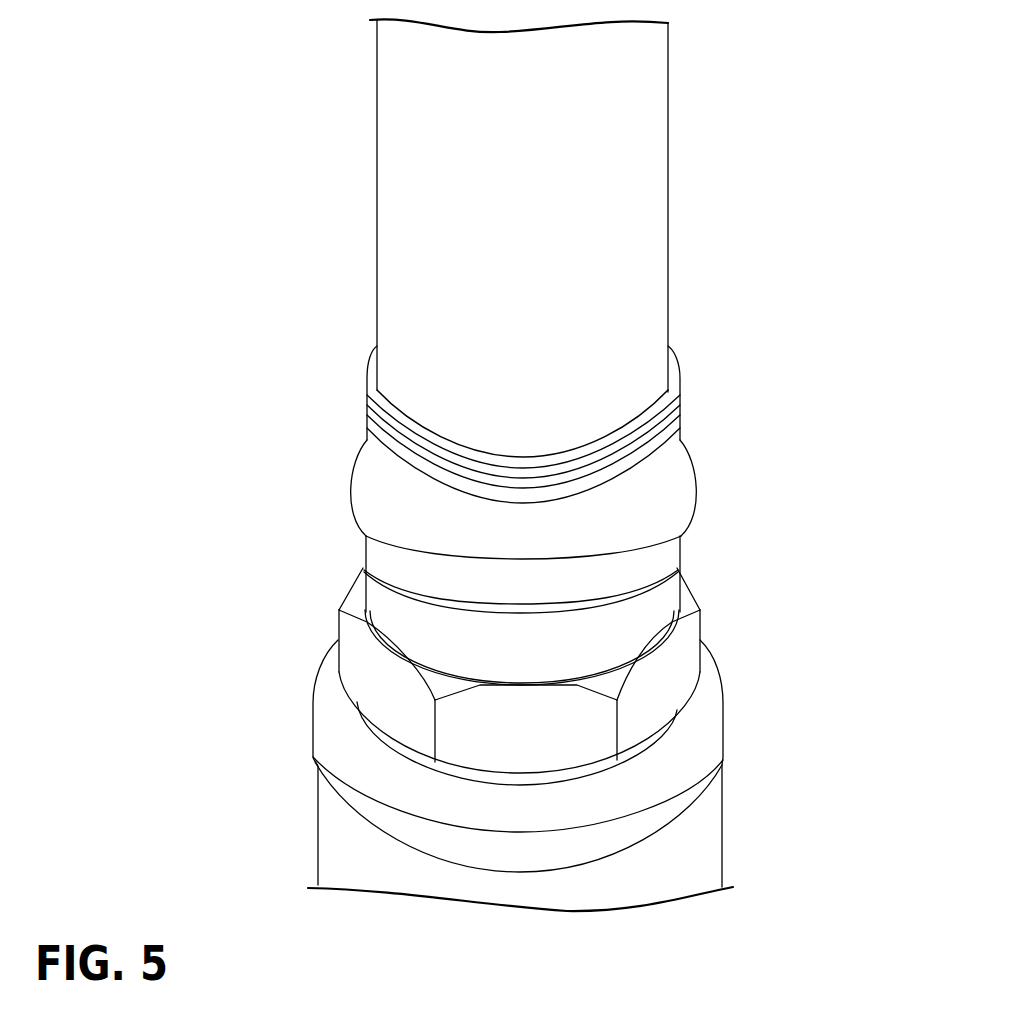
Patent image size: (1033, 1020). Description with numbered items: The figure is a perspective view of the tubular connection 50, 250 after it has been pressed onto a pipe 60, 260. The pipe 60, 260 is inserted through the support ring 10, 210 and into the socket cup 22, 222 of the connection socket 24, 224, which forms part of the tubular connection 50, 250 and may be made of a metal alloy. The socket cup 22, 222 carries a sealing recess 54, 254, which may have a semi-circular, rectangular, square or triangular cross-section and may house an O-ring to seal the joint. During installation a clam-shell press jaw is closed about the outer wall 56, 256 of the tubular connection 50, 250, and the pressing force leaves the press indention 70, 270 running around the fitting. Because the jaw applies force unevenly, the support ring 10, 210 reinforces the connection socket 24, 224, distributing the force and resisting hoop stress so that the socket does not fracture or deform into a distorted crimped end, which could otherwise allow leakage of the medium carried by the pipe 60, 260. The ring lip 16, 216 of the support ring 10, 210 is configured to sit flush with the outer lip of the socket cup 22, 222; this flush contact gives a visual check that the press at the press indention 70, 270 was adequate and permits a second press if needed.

The pipe 60 is at (604, 238).
The pipe 260 is at (612, 218).
The support ring 10 is at (516, 518).
The support ring 210 is at (683, 342).
The ring lip 16 is at (606, 391).
The ring lip 216 is at (671, 393).
The press indention 70 is at (609, 426).
The press indention 270 is at (677, 432).
The socket cup 22 is at (520, 401).
The socket cup 222 is at (520, 401).
The outer wall 56 is at (595, 482).
The outer wall 256 is at (645, 493).
The sealing recess 54 is at (611, 535).
The sealing recess 254 is at (665, 522).
The connection socket 24 is at (437, 660).
The connection socket 224 is at (343, 579).
The tubular connection 50 is at (622, 775).
The tubular connection 250 is at (782, 665).